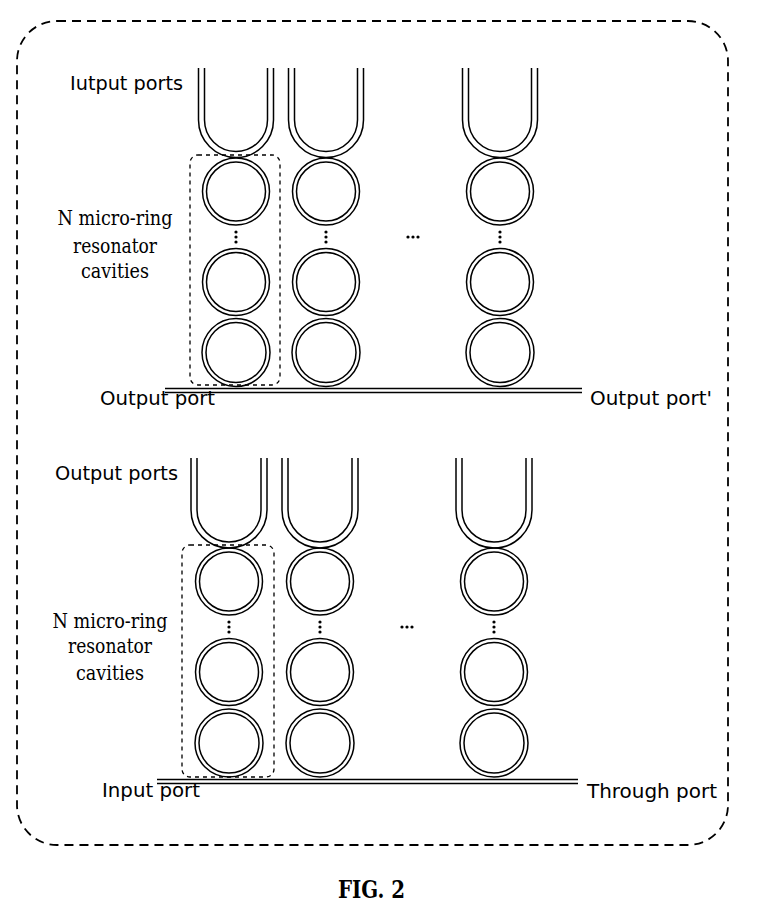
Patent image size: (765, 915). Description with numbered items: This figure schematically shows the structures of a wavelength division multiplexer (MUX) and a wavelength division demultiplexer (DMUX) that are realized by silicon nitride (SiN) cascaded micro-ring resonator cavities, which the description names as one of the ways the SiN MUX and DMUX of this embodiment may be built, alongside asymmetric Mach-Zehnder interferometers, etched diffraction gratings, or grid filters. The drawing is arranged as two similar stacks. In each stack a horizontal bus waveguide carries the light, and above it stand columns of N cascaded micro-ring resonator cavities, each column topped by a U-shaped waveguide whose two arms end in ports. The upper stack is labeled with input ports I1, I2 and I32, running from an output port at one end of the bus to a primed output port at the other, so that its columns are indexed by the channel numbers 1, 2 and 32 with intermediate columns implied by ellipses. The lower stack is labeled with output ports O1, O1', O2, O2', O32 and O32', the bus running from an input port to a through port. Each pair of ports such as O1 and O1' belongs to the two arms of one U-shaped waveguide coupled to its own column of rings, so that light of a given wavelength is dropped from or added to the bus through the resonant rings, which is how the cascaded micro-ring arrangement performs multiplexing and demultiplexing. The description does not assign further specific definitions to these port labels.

The input port I1 U-shaped waveguide with micro-ring resonator column I1 is at (236, 216).
The input port I1 U-shaped waveguide with micro-ring resonator column 1 is at (236, 216).
The input port I2 U-shaped waveguide with micro-ring resonator column I2 is at (326, 216).
The input port I2 U-shaped waveguide with micro-ring resonator column 2 is at (326, 216).
The input port I32 U-shaped waveguide with micro-ring resonator column I32 is at (498, 216).
The input port I32 U-shaped waveguide with micro-ring resonator column 32 is at (498, 216).
The output port O1 U-shaped waveguide with micro-ring resonator column O1 is at (227, 606).
The output port O1' waveguide arm O1' is at (262, 473).
The output port O2 U-shaped waveguide with micro-ring resonator column O2 is at (320, 606).
The output port O2' waveguide arm O2' is at (365, 473).
The output port O32 U-shaped waveguide with micro-ring resonator column O32 is at (490, 606).
The output port O32' waveguide arm O32' is at (542, 473).